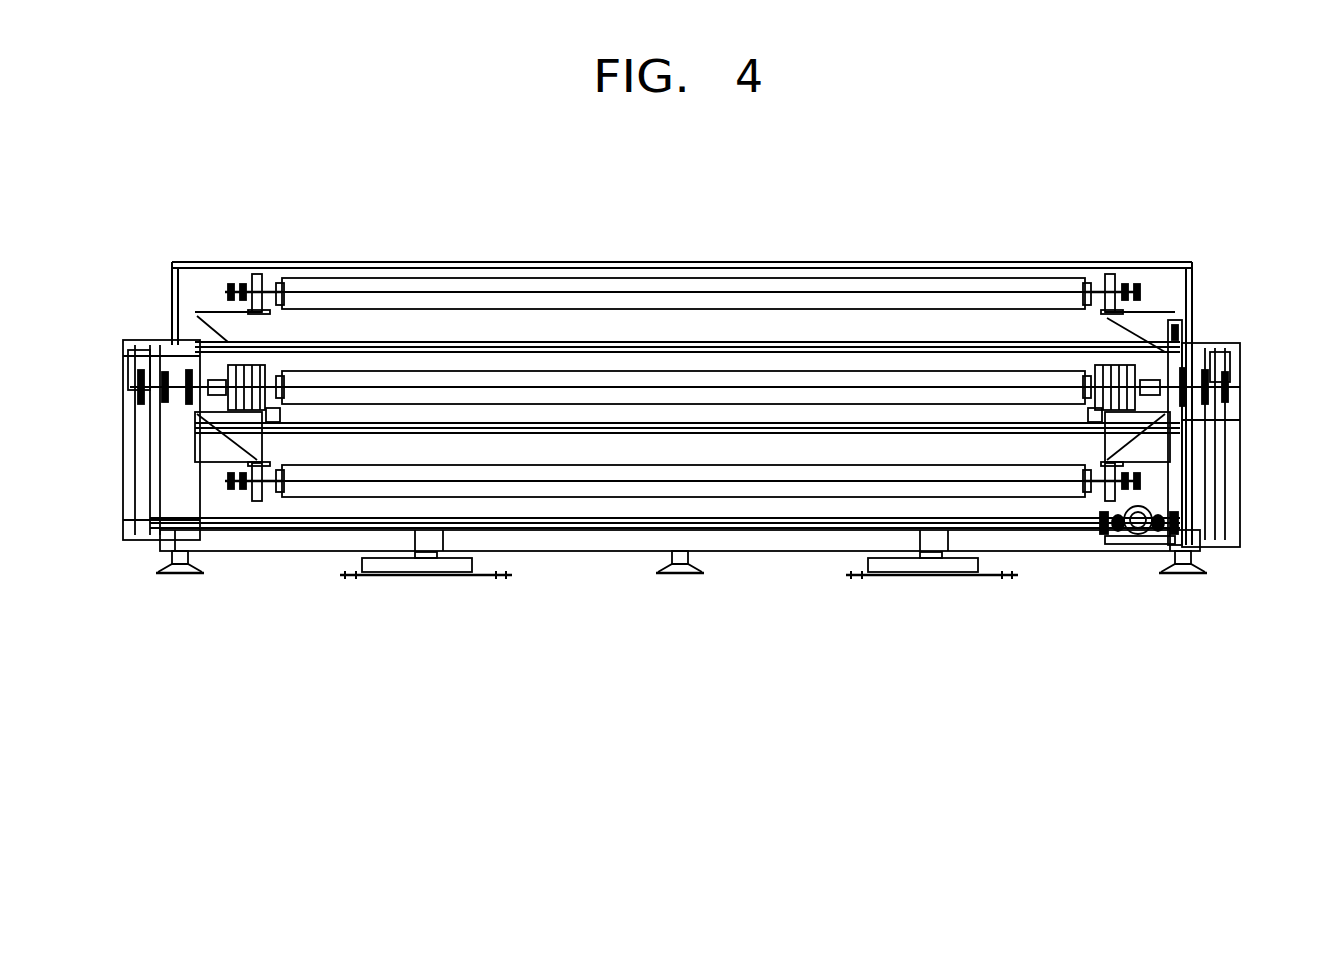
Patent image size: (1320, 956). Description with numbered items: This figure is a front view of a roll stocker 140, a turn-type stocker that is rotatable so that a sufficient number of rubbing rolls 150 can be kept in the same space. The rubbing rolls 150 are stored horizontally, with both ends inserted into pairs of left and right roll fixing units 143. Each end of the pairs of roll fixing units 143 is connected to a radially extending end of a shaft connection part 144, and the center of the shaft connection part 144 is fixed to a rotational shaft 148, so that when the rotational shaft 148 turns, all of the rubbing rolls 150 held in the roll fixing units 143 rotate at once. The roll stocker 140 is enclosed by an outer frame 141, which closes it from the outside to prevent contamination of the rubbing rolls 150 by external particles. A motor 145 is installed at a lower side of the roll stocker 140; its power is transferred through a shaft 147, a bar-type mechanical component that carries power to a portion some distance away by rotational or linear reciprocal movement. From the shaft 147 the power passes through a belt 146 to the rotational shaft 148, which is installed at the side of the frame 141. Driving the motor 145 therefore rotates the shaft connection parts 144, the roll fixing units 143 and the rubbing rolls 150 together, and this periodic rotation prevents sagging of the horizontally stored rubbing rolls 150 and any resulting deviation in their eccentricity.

The roll stocker 140 is at (207, 220).
The outer frame 141 is at (547, 265).
The roll fixing units 143 is at (1115, 276).
The shaft connection part 144 is at (1175, 342).
The motor 145 is at (1135, 542).
The belt 146 is at (1222, 490).
The shaft 147 is at (1049, 522).
The rotational shaft 148 is at (1236, 388).
The rubbing rolls 150 is at (620, 283).